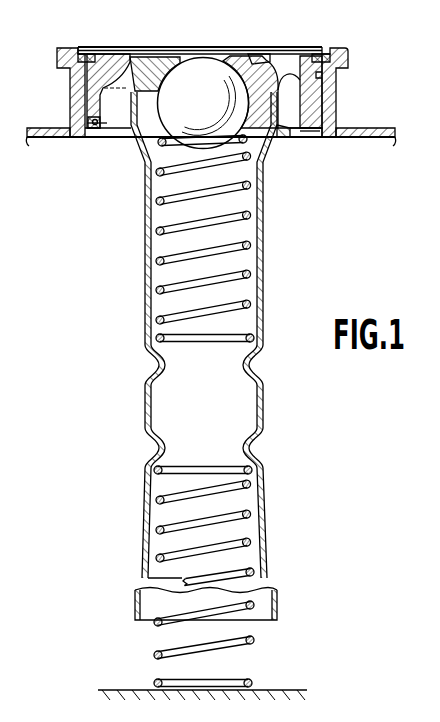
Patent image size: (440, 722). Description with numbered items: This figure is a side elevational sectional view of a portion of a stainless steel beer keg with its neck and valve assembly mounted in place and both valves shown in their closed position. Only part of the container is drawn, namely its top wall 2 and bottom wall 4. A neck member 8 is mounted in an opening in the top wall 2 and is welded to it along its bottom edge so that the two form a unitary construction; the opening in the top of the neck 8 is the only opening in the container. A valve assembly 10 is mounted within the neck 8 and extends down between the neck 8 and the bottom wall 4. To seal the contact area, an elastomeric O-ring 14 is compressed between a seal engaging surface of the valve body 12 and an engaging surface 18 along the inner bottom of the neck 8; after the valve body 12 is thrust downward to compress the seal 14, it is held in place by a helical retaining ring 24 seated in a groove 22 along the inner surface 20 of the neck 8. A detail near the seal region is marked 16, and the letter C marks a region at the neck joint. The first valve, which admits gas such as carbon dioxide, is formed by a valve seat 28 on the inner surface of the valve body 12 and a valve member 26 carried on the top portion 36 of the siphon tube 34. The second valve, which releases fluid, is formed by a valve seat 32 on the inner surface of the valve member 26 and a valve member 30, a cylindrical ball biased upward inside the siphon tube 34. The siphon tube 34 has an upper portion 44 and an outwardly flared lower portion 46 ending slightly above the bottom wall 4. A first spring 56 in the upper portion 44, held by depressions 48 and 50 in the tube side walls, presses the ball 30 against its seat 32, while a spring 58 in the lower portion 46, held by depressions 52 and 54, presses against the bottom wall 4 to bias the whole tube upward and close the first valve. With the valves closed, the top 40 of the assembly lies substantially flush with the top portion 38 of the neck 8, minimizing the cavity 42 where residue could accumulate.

The top wall 2 is at (388, 128).
The bottom wall 4 is at (277, 690).
The neck member 8 is at (337, 106).
The valve assembly 10 is at (200, 356).
The valve body 12 is at (297, 58).
The O-ring 14 is at (303, 137).
The seal 16 is at (92, 118).
The engaging surface 18 is at (94, 127).
The inner surface 20 is at (332, 74).
The groove 22 is at (86, 50).
The helical retaining ring 24 is at (313, 50).
The valve member 26 is at (262, 62).
The valve seat 28 is at (276, 60).
The valve member 30 is at (189, 75).
The valve seat 32 is at (238, 78).
The siphon tube 34 is at (265, 232).
The top portion 36 is at (285, 126).
The top portion 38 is at (60, 47).
The top 40 is at (143, 60).
The cavity 42 is at (123, 53).
The upper portion 44 is at (264, 318).
The lower portion 46 is at (267, 562).
The depression 48 is at (257, 359).
The depression 50 is at (153, 360).
The depression 52 is at (257, 449).
The depression 54 is at (154, 447).
The first spring 56 is at (153, 292).
The spring 58 is at (251, 539).
The clearance direction arrow C is at (333, 147).